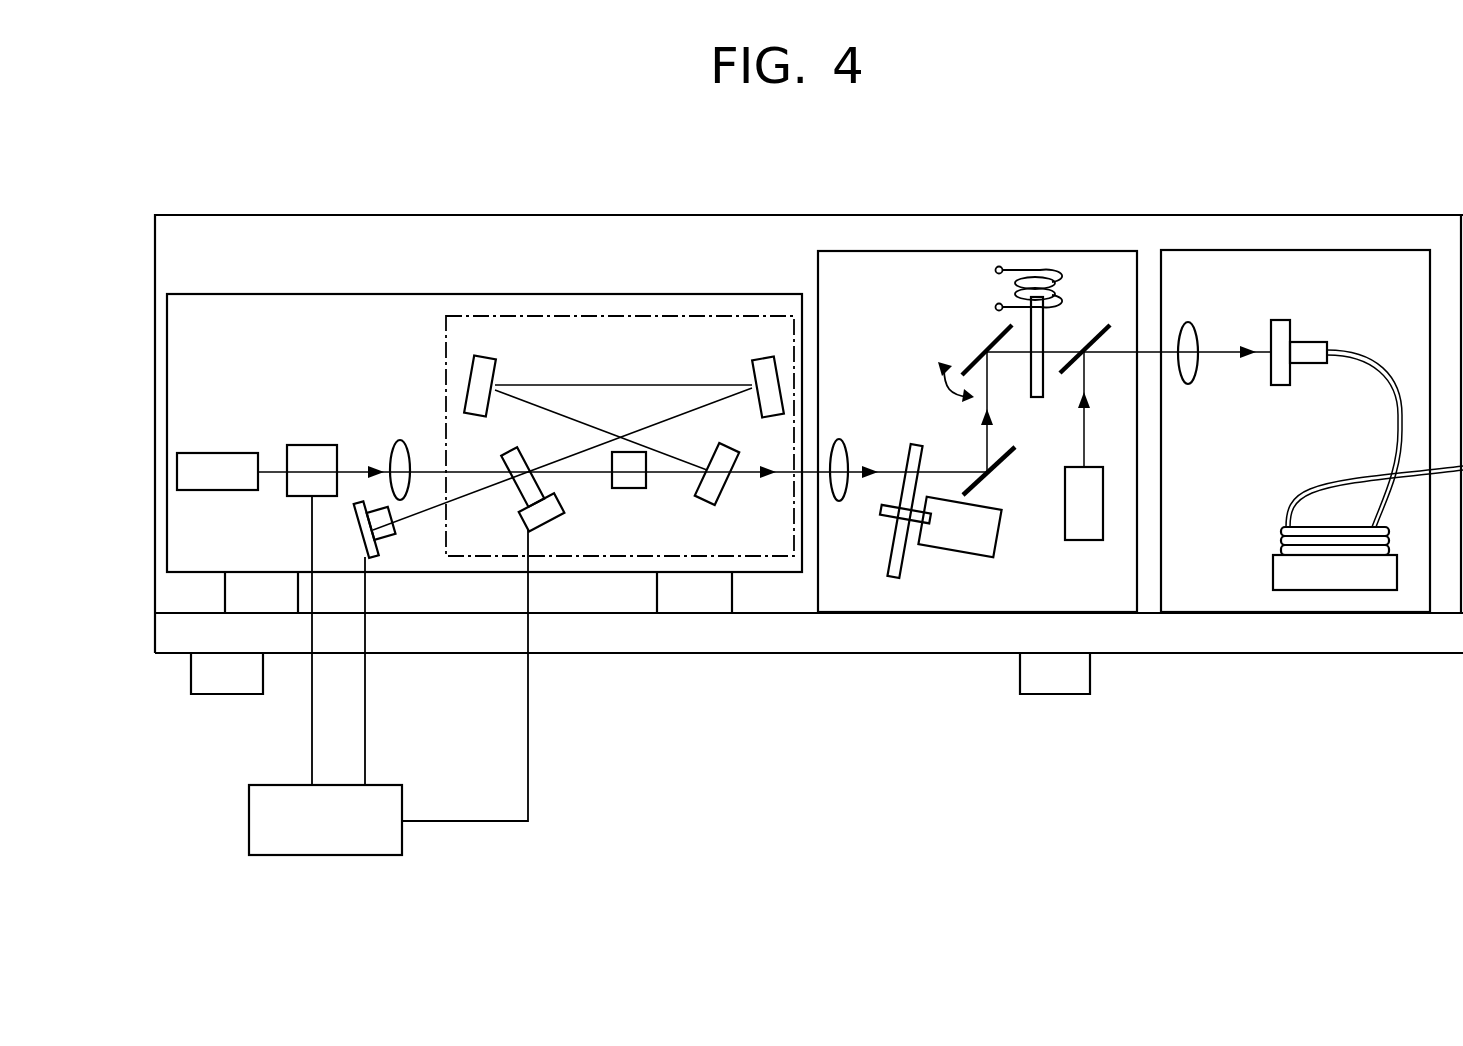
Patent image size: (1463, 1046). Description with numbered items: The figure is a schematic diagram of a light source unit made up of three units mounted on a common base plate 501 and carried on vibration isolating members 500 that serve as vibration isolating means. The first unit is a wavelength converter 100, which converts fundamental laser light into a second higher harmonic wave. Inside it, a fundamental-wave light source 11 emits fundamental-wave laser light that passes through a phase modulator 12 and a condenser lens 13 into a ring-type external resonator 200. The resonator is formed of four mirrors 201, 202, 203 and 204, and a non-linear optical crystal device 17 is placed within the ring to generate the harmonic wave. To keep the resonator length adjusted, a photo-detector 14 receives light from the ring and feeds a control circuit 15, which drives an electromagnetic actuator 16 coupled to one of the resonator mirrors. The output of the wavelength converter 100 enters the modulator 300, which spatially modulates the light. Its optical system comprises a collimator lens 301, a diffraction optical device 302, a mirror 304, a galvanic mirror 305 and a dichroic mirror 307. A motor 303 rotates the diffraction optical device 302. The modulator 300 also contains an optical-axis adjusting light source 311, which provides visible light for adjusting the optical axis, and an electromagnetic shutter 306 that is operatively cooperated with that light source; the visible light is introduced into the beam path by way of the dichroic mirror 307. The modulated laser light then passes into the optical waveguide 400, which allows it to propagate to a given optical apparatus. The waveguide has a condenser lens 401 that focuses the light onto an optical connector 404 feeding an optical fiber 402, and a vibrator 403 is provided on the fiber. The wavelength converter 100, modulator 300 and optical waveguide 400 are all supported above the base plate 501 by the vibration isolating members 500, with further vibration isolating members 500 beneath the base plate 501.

The wavelength converter 100 is at (330, 292).
The ring-type external resonator 200 is at (660, 315).
The modulator 300 is at (957, 250).
The optical waveguide 400 is at (1280, 250).
The fundamental-wave light source 11 is at (213, 452).
The phase modulator 12 is at (310, 445).
The condenser lens 13 is at (403, 438).
The photo-detector 14 is at (388, 539).
The control circuit 15 is at (346, 856).
The electromagnetic actuator 16 is at (542, 520).
The non-linear optical crystal device 17 is at (632, 490).
The mirror 201 is at (498, 463).
The mirror 202 is at (725, 490).
The mirror 203 is at (483, 358).
The mirror 204 is at (766, 359).
The collimator lens 301 is at (847, 457).
The diffraction optical device 302 is at (893, 541).
The motor 303 is at (955, 556).
The mirror 304 is at (998, 460).
The galvanic mirror 305 is at (990, 340).
The electromagnetic shutter 306 is at (1060, 278).
The dichroic mirror 307 is at (1065, 372).
The optical-axis adjusting light source 311 is at (1080, 541).
The condenser lens 401 is at (1195, 332).
The optical fiber 402 is at (1375, 365).
The vibrator 403 is at (1273, 579).
The optical connector 404 is at (1308, 340).
The vibration isolating members 500 is at (226, 695).
The base plate 501 is at (1325, 638).